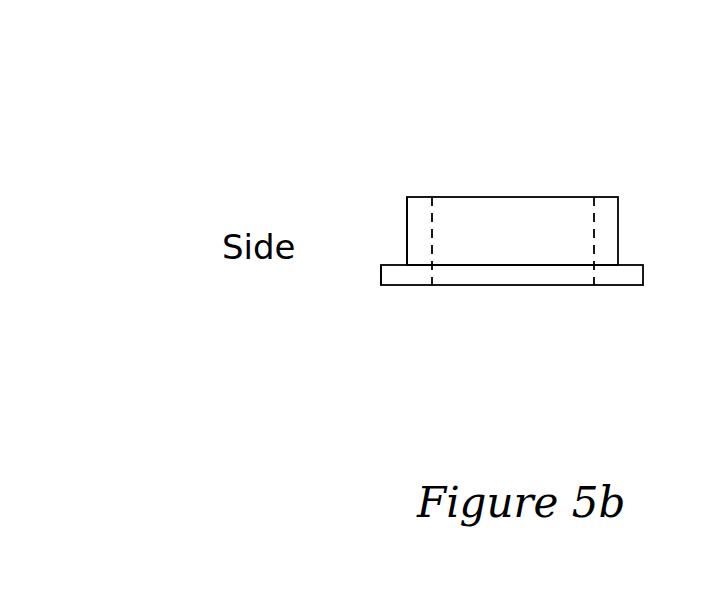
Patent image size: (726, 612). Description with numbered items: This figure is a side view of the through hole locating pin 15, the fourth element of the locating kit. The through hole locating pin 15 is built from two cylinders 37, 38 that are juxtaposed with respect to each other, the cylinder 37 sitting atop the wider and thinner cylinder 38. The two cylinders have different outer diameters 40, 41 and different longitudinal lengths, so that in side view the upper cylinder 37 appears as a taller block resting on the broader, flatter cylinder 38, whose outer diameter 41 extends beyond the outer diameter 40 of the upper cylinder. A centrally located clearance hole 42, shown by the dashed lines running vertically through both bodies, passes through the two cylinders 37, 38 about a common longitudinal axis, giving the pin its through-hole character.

The through hole locating pin 15 is at (602, 131).
The cylinder 37 is at (565, 210).
The cylinder 38 is at (615, 285).
The outer diameter 40 is at (398, 243).
The outer diameter 41 is at (370, 275).
The clearance hole 42 is at (432, 240).